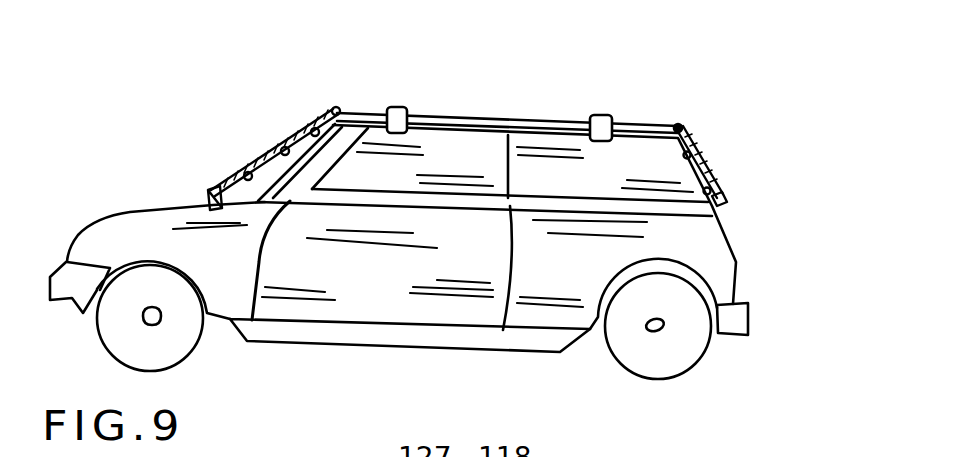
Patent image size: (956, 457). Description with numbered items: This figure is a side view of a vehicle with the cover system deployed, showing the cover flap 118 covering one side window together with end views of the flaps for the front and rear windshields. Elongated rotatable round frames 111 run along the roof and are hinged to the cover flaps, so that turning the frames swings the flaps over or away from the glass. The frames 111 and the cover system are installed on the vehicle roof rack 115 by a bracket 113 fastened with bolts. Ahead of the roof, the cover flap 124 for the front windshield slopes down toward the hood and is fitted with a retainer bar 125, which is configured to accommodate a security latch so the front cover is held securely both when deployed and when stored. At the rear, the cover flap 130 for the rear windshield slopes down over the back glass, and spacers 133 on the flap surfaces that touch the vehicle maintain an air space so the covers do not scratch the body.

The rotatable round frame 111 is at (686, 124).
The bracket 113 is at (395, 108).
The vehicle roof rack 115 is at (483, 130).
The cover flap for side window 118 is at (618, 160).
The cover flap for front windshield 124 is at (283, 146).
The retainer bar 125 is at (210, 192).
The cover flap for rear windshield 130 is at (704, 165).
The spacer 133 is at (722, 188).